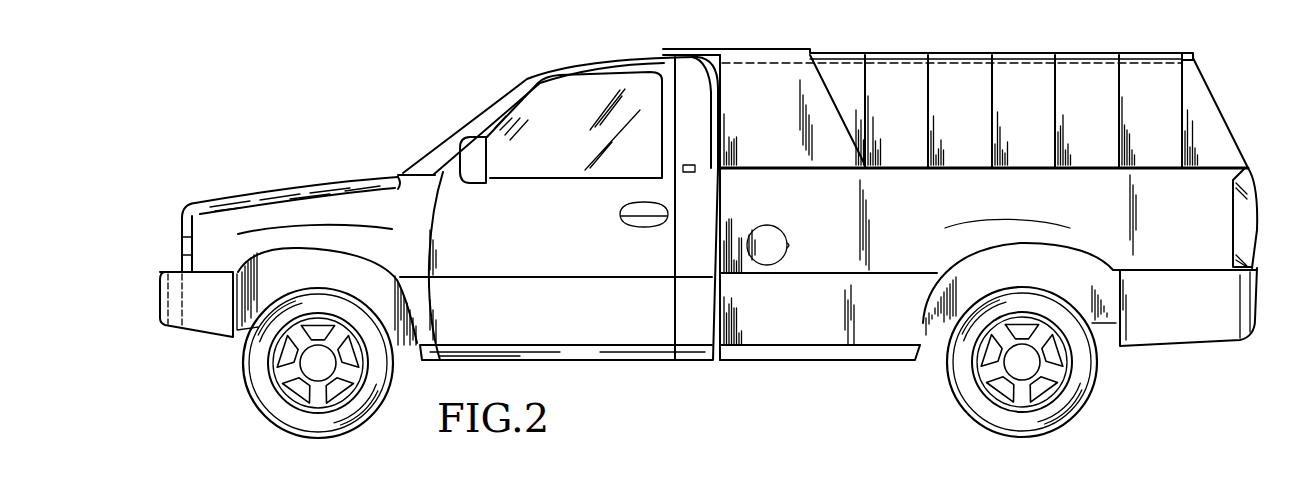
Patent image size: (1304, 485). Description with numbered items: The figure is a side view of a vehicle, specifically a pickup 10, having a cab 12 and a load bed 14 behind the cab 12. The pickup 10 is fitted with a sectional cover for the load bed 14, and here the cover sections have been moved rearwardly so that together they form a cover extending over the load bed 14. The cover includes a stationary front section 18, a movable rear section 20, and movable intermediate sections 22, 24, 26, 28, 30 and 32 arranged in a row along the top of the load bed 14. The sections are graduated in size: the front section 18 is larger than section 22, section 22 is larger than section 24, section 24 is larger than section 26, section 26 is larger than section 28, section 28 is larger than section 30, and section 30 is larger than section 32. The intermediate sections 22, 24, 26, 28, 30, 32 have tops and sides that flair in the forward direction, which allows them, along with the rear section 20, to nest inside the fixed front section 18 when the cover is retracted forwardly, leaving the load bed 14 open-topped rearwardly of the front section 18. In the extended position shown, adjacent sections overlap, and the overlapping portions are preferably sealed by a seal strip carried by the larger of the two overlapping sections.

The pickup 10 is at (720, 219).
The cab 12 is at (564, 250).
The load bed 14 is at (1169, 235).
The stationary front section 18 is at (1205, 103).
The movable rear section 20 is at (784, 120).
The intermediate section 22 is at (1150, 67).
The intermediate section 24 is at (1090, 67).
The intermediate section 26 is at (1023, 75).
The intermediate section 28 is at (962, 72).
The intermediate section 30 is at (900, 70).
The intermediate section 32 is at (840, 68).